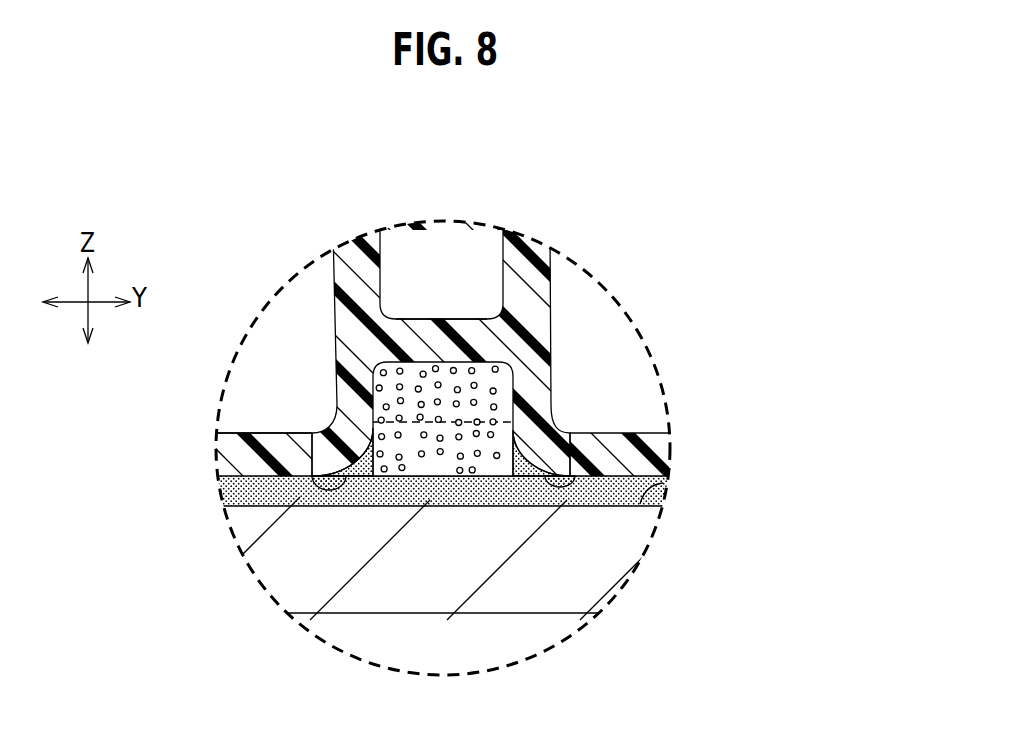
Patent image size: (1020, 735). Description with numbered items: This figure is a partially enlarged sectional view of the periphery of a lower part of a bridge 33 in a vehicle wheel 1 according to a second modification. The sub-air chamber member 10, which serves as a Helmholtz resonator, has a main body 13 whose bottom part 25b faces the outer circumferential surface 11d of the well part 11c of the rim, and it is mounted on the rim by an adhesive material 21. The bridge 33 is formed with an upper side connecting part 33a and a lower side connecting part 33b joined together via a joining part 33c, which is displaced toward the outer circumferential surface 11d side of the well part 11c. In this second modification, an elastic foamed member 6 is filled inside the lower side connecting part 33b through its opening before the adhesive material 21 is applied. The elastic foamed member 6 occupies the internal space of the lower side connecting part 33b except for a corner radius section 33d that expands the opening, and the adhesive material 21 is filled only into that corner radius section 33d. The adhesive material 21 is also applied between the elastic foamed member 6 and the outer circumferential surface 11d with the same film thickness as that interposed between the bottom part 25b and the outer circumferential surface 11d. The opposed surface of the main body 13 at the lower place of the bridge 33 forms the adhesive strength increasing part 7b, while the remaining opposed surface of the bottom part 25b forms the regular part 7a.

The vehicle wheel 1 is at (513, 626).
The elastic foamed member 6 is at (448, 506).
The regular part 7a is at (603, 493).
The adhesive strength increasing part 7b is at (372, 433).
The sub-air chamber member 10 is at (500, 477).
The main body 13 is at (650, 440).
The well part 11c is at (736, 501).
The outer circumferential surface 11d is at (660, 481).
The adhesive material 21 is at (219, 496).
The bottom part 25b is at (236, 438).
The bridge 33 is at (435, 311).
The upper side connecting part 33a is at (368, 280).
The lower side connecting part 33b is at (416, 372).
The joining part 33c is at (460, 325).
The corner radius section 33d is at (316, 433).